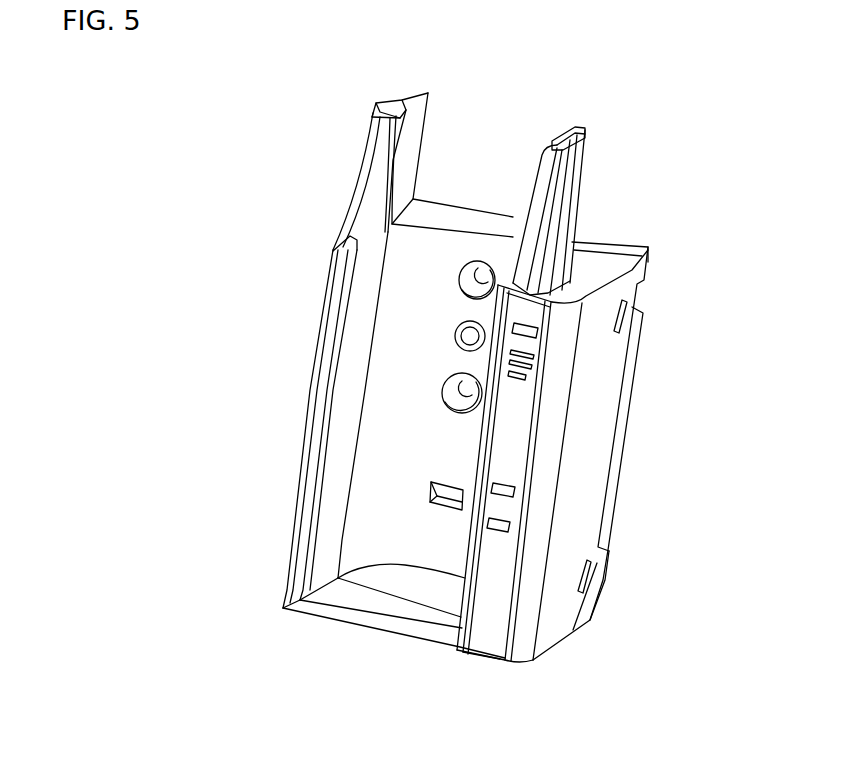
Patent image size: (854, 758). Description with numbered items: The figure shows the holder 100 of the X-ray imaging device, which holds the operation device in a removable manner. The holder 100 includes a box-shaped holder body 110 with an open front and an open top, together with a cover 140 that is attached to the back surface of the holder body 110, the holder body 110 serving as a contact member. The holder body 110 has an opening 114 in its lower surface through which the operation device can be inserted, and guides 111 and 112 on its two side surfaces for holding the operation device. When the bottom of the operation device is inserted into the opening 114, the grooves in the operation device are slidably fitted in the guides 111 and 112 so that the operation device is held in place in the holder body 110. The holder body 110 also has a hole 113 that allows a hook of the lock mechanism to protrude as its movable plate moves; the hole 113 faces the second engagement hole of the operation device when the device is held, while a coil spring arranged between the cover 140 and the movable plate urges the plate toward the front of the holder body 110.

The holder 100 is at (632, 557).
The holder body 110 is at (333, 251).
The guide 111 is at (380, 104).
The guide 112 is at (565, 130).
The hole 113 is at (425, 495).
The opening 114 is at (367, 592).
The cover 140 is at (648, 263).